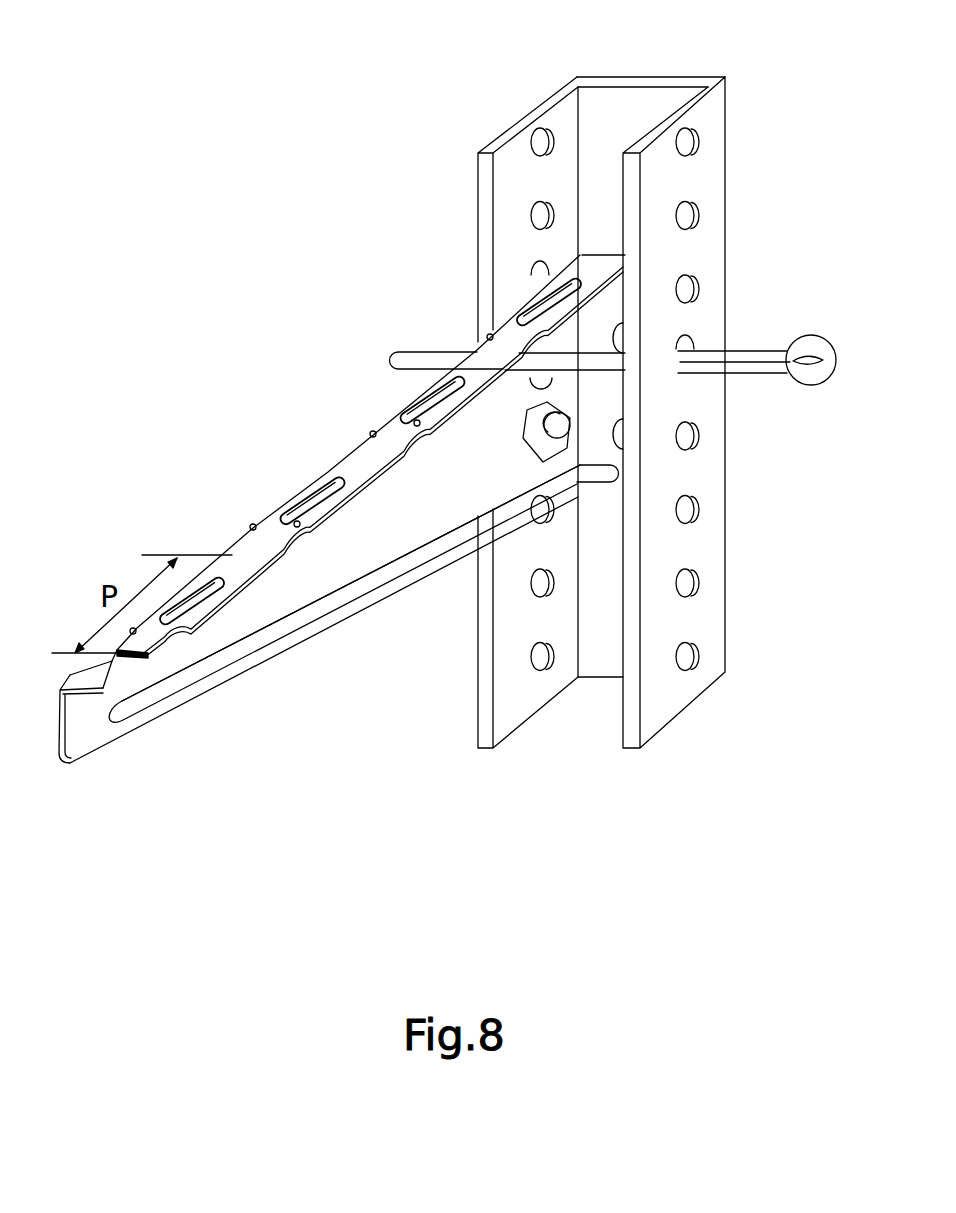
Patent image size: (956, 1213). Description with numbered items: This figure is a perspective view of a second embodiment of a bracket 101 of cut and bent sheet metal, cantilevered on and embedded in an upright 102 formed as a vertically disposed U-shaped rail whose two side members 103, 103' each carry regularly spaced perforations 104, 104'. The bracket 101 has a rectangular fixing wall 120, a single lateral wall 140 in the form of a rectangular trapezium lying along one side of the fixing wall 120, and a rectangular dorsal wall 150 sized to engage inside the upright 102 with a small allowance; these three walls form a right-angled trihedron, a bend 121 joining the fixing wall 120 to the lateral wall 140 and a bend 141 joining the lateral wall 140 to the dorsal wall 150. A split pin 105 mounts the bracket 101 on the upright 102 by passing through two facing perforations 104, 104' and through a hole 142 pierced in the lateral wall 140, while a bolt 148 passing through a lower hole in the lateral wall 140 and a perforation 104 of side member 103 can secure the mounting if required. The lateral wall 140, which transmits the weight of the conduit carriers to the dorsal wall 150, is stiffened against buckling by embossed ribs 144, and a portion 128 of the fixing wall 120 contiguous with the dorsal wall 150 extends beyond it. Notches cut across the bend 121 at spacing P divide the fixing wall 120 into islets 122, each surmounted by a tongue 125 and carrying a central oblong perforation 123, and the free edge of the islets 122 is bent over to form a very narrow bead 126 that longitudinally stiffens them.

The bracket 101 is at (327, 645).
The upright 102 is at (595, 680).
The side member 103 is at (469, 412).
The side member 103' is at (749, 412).
The perforations 104 is at (454, 399).
The perforations 104' is at (778, 399).
The split pin 105 is at (811, 372).
The fixing wall 120 is at (267, 508).
The bend 121 is at (136, 628).
The islets 122 is at (237, 583).
The oblong perforation 123 is at (310, 477).
The tongues 125 is at (352, 468).
The bead 126 is at (353, 467).
The portion of fixing wall 128 is at (593, 268).
The lateral wall 140 is at (73, 743).
The bend 141 is at (583, 415).
The hole 142 is at (530, 380).
The embossed ribs 144 is at (383, 573).
The bolt 148 is at (376, 433).
The dorsal wall 150 is at (607, 487).